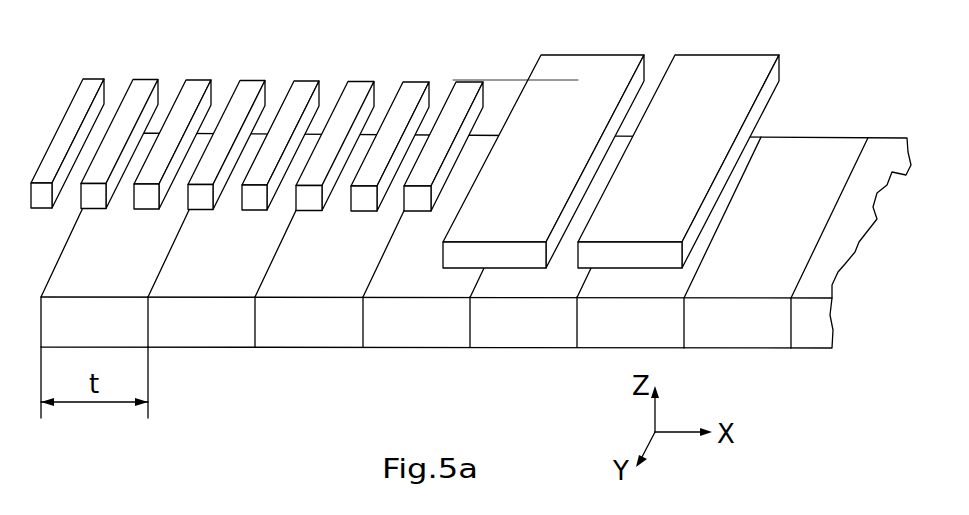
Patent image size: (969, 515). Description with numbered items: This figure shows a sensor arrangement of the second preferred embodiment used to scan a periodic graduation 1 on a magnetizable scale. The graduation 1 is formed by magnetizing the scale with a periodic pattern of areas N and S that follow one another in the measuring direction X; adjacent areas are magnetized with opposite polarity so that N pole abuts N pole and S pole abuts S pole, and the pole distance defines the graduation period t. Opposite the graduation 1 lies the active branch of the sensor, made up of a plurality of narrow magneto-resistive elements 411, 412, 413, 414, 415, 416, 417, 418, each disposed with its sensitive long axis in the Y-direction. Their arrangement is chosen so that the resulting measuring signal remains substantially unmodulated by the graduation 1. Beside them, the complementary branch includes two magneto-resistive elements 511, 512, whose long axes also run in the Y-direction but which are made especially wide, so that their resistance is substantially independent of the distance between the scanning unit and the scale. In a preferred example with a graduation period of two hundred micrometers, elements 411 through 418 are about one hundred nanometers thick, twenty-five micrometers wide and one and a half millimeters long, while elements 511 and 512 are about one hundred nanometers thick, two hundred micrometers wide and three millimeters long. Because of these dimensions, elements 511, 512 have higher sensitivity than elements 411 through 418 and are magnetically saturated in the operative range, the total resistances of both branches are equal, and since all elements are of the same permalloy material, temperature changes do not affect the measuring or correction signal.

The graduation 1 is at (822, 148).
The magneto-resistive element 411 is at (85, 92).
The magneto-resistive element 412 is at (147, 83).
The magneto-resistive element 413 is at (200, 85).
The magneto-resistive element 414 is at (257, 82).
The magneto-resistive element 415 is at (305, 86).
The magneto-resistive element 416 is at (362, 87).
The magneto-resistive element 417 is at (417, 87).
The magneto-resistive element 418 is at (472, 87).
The magneto-resistive element 511 is at (587, 62).
The magneto-resistive element 512 is at (715, 65).